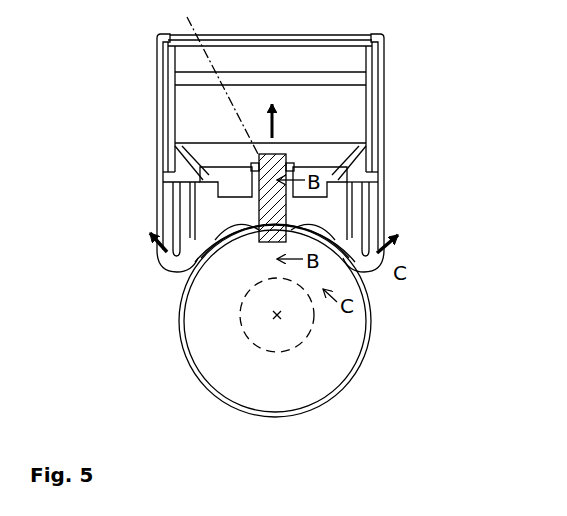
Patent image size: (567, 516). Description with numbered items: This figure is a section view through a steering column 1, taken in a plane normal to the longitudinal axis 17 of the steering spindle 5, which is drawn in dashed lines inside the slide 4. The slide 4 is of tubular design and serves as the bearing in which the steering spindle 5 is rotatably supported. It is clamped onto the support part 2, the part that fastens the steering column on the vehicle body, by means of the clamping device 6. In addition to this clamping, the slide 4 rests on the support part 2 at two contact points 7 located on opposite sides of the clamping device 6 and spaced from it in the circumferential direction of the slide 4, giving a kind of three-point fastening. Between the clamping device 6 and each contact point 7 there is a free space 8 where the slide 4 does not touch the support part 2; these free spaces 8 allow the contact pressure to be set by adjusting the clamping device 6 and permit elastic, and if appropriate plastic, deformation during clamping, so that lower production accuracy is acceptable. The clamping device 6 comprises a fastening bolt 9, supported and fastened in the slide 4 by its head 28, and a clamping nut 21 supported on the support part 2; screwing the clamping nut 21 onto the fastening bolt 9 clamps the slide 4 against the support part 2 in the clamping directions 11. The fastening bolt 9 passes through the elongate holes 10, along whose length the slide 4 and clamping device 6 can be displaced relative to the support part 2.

The steering column 1 is at (424, 141).
The support part 2 is at (380, 142).
The slide 4 is at (368, 342).
The steering spindle 5 is at (242, 325).
The clamping device 6 is at (222, 182).
The contact points 7 is at (200, 263).
The free space 8 is at (232, 222).
The fastening bolt 9 is at (216, 77).
The elongate holes 10 is at (182, 268).
The clamping directions 11 is at (274, 128).
The longitudinal axis 17 is at (282, 320).
The clamping nut 21 is at (251, 164).
The head 28 is at (335, 232).